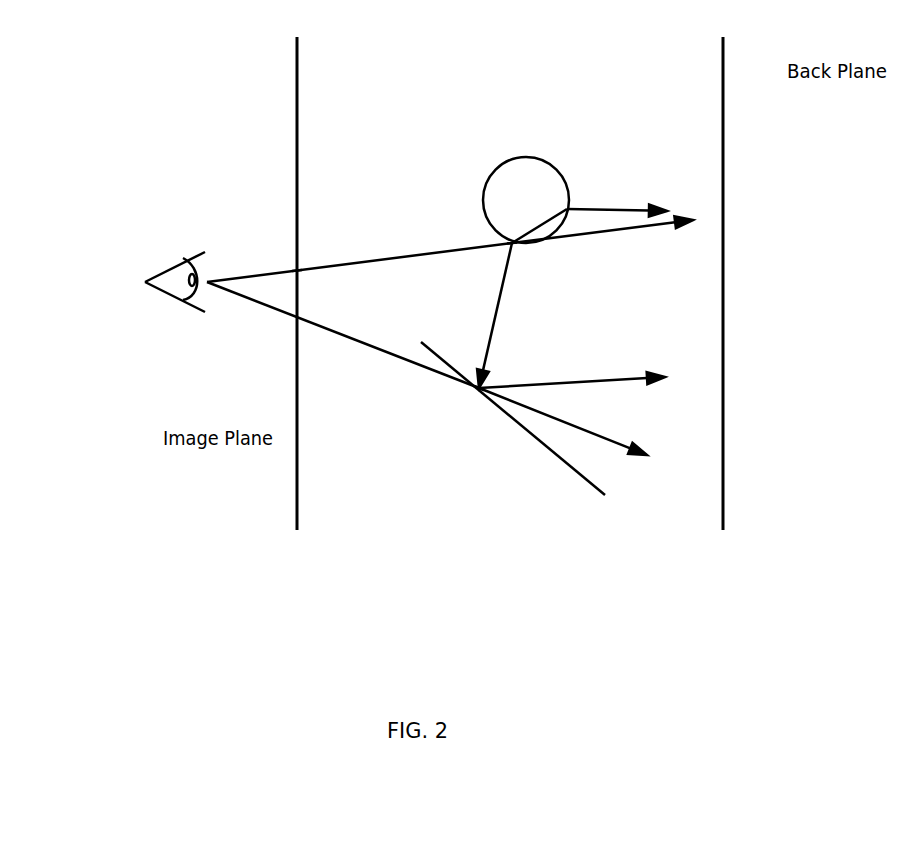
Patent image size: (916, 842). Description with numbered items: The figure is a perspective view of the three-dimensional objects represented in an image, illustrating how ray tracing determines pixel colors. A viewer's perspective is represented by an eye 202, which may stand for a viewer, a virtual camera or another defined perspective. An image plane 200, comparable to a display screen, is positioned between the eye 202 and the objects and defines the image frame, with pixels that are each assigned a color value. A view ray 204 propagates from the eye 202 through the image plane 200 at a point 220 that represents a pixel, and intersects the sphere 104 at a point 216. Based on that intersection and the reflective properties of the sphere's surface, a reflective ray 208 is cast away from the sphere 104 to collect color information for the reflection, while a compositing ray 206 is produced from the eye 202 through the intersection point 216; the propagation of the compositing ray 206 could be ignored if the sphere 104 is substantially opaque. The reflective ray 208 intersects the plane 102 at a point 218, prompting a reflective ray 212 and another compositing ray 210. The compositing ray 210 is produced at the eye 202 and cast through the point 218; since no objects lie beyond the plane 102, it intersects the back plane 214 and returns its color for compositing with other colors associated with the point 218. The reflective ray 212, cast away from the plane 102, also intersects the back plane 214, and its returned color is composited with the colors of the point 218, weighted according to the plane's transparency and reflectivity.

The plane 102 is at (584, 480).
The sphere 104 is at (500, 165).
The image plane 200 is at (297, 488).
The eye 202 is at (185, 262).
The view ray 204 is at (403, 256).
The compositing ray 206 is at (663, 226).
The reflective ray 208 is at (496, 310).
The compositing ray 210 is at (390, 354).
The reflective ray 212 is at (647, 378).
The back plane 214 is at (723, 518).
The intersection point 216 is at (497, 242).
The intersection point 218 is at (470, 389).
The point 220 is at (297, 266).